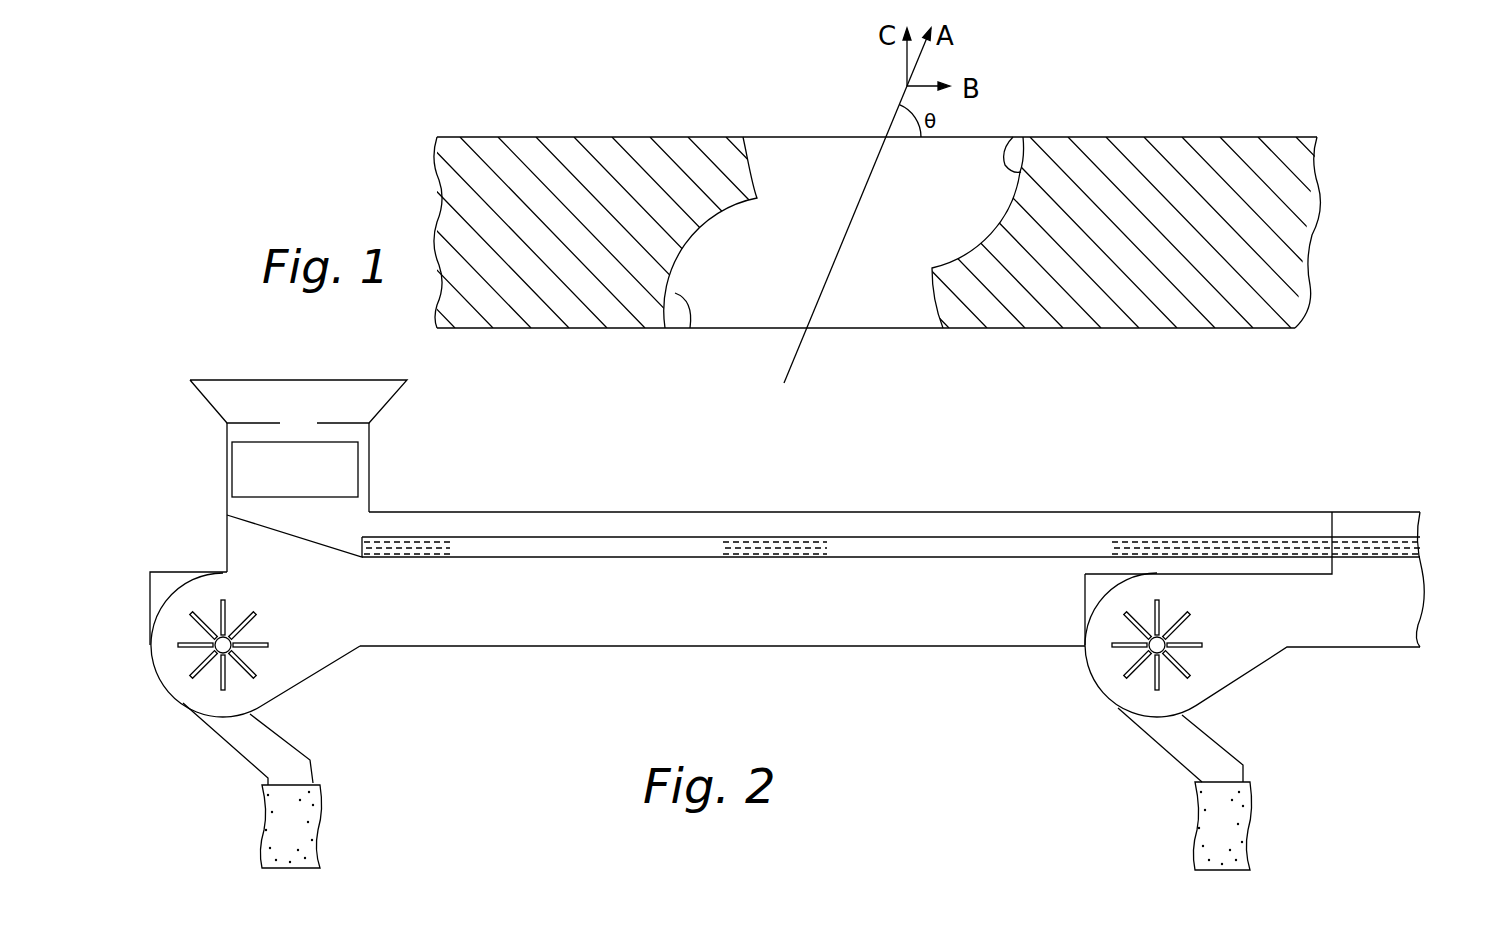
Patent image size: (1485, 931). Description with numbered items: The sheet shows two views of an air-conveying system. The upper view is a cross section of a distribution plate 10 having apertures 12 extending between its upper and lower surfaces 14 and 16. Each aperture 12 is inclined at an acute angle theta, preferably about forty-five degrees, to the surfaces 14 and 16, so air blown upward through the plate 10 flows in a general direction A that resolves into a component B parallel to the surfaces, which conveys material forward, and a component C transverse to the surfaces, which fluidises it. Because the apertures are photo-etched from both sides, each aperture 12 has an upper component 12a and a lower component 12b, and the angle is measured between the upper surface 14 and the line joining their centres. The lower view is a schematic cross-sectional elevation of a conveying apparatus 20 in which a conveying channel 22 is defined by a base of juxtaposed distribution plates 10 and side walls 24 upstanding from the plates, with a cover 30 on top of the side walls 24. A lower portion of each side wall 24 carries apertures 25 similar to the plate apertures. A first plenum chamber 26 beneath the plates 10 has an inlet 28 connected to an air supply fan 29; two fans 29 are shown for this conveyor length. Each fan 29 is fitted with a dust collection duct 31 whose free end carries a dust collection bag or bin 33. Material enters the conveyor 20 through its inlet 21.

In FIG. 1, the plate 10 is at (643, 125).
In FIG. 2, the plate 10 is at (628, 558).
In FIG. 1, the apertures 12 is at (815, 168).
In FIG. 1, the upper component 12a is at (1013, 137).
In FIG. 1, the lower component 12b is at (690, 328).
In FIG. 1, the upper surface 14 is at (1127, 137).
In FIG. 1, the lower surface 16 is at (1055, 329).
In FIG. 2, the conveying apparatus 20 is at (957, 480).
In FIG. 2, the inlet 21 is at (392, 378).
In FIG. 2, the conveying channel 22 is at (700, 506).
In FIG. 2, the side walls 24 is at (882, 525).
In FIG. 2, the apertures 25 is at (435, 540).
In FIG. 2, the first plenum chamber 26 is at (767, 617).
In FIG. 2, the inlet 28 is at (310, 648).
In FIG. 2, the air supply fan 29 is at (213, 675).
In FIG. 2, the cover 30 is at (990, 512).
In FIG. 2, the dust collection duct 31 is at (310, 758).
In FIG. 2, the dust collection bag or bin 33 is at (312, 821).